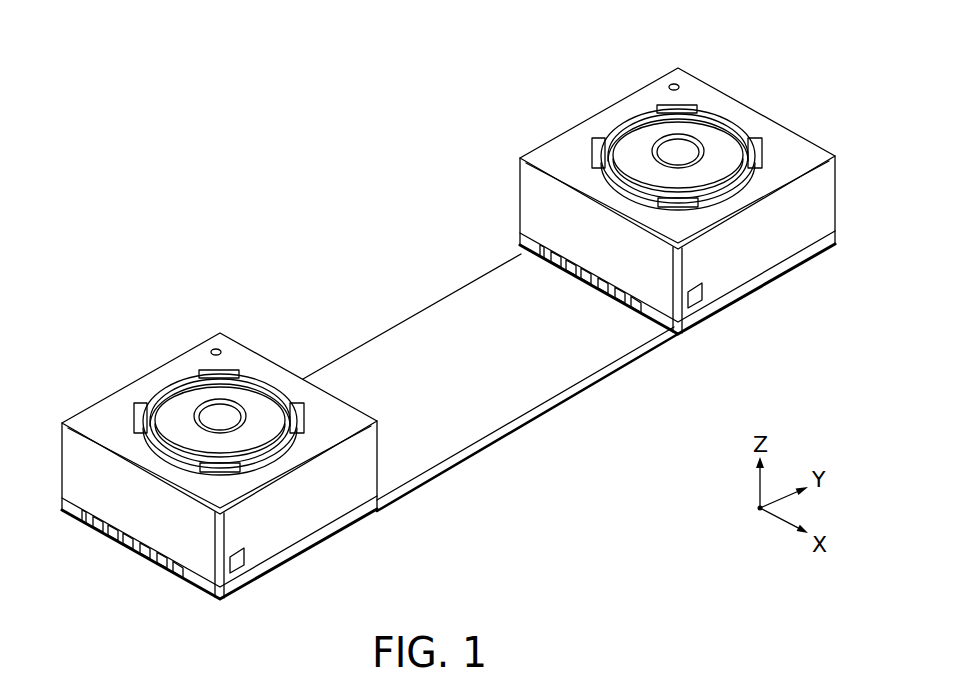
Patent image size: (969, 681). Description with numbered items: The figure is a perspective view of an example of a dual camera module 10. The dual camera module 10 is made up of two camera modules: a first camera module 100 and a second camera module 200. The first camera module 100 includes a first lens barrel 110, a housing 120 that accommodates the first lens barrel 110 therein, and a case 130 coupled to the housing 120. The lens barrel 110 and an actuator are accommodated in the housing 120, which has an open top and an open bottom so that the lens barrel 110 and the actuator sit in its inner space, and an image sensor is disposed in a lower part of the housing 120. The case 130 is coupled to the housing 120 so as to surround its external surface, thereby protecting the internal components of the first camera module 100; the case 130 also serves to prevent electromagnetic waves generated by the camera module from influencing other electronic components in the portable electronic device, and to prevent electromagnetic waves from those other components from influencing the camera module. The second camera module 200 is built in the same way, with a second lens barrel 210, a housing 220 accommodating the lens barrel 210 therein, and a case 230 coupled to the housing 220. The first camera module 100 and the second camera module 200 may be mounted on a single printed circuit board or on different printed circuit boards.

The dual camera module 10 is at (277, 36).
The first camera module 100 is at (243, 434).
The first lens barrel 110 is at (217, 387).
The housing 120 is at (243, 547).
The case 130 is at (219, 465).
The second camera module 200 is at (699, 168).
The second lens barrel 210 is at (675, 122).
The housing 220 is at (699, 282).
The case 230 is at (677, 200).